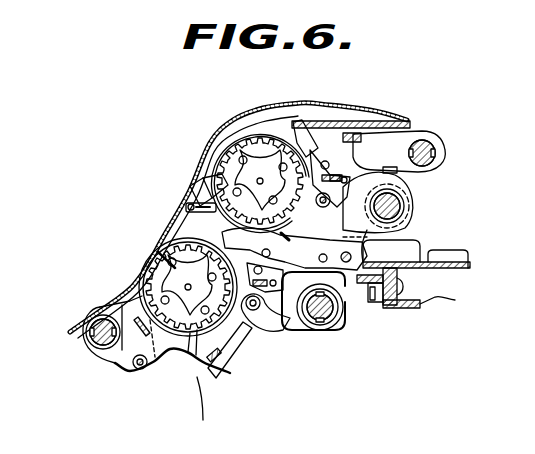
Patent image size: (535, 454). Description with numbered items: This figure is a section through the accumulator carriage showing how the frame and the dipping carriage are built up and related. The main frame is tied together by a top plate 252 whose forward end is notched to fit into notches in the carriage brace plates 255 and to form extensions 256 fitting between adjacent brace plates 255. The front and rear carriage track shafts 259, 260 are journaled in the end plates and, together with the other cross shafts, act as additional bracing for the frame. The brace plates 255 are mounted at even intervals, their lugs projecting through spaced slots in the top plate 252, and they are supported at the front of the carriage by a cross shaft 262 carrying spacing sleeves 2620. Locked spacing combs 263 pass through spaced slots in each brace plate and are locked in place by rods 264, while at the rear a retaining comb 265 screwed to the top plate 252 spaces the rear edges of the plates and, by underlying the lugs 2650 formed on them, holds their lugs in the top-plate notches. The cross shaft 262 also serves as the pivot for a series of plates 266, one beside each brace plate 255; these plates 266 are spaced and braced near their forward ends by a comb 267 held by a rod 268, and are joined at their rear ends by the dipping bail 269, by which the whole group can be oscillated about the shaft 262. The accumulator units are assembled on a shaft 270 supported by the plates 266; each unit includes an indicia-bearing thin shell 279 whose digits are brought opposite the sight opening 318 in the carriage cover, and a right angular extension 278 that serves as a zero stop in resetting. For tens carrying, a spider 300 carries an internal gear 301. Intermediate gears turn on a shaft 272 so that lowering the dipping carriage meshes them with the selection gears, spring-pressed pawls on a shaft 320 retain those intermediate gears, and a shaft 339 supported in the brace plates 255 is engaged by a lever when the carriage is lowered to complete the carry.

The lugs 2650 is at (352, 187).
The top plate 252 is at (408, 121).
The retaining comb 265 is at (440, 133).
The rear carriage track shaft 260 is at (440, 166).
The right angular extension 278 is at (203, 187).
The extensions 256 is at (193, 193).
The carriage brace plates 255 is at (193, 212).
The shaft 270 is at (152, 256).
The sight opening 318 is at (170, 260).
The rods 264 is at (120, 290).
The locked spacing combs 263 is at (100, 298).
The front carriage track shaft 259 is at (100, 352).
The thin shell 279 is at (133, 370).
The cross shaft 262 is at (130, 370).
The spacing sleeves 2620 is at (147, 377).
The spider 300 is at (163, 373).
The internal gear 301 is at (200, 411).
The plates 266 is at (183, 377).
The rod 268 is at (217, 363).
The comb 267 is at (226, 352).
The shaft 272 is at (272, 327).
The shaft 339 is at (270, 253).
The shaft 320 is at (340, 325).
The dipping bail 269 is at (415, 297).